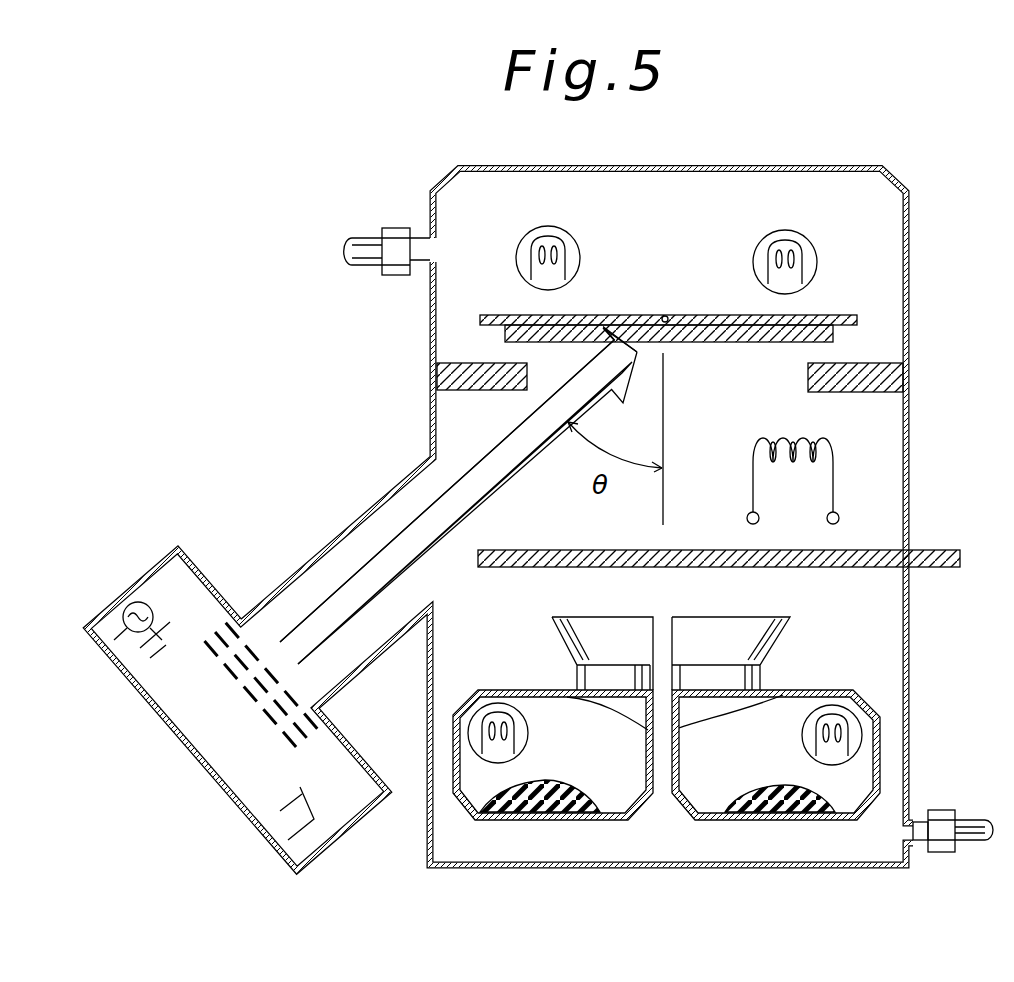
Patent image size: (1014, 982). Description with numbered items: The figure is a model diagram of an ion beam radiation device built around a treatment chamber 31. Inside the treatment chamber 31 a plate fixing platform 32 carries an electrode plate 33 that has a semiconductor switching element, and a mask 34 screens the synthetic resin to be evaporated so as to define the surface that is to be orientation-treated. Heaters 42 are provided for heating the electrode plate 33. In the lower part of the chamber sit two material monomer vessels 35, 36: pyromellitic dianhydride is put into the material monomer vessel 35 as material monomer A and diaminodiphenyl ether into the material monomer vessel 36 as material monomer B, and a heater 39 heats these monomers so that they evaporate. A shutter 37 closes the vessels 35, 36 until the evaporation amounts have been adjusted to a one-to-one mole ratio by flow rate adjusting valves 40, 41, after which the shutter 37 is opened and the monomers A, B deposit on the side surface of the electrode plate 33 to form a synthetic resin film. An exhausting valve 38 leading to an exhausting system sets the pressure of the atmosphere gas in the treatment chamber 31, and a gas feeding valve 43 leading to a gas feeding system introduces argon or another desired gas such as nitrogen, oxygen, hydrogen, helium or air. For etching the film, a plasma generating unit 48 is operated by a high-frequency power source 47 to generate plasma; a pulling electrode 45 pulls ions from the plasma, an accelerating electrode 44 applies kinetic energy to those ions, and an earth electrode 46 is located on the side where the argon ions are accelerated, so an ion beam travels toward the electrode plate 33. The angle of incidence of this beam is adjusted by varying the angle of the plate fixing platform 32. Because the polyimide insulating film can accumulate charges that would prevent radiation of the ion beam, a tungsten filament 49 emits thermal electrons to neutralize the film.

The treatment chamber 31 is at (830, 165).
The plate fixing platform 32 is at (667, 315).
The electrode plate 33 is at (778, 335).
The mask 34 is at (478, 378).
The material monomer vessel 35 is at (465, 692).
The material monomer vessel 36 is at (860, 696).
The shutter 37 is at (945, 550).
The exhausting valve 38 is at (945, 815).
The heater 39 is at (500, 710).
The flow rate adjusting valve 40 is at (590, 673).
The flow rate adjusting valve 41 is at (748, 675).
The heater 42 is at (578, 248).
The gas feeding valve 43 is at (393, 238).
The accelerating electrode 44 is at (206, 639).
The pulling electrode 45 is at (216, 630).
The earth electrode 46 is at (228, 620).
The high-frequency power source 47 is at (135, 602).
The plasma generating unit 48 is at (262, 785).
The tungsten filament 49 is at (833, 470).
The material monomer A is at (575, 792).
The material monomer B is at (745, 800).